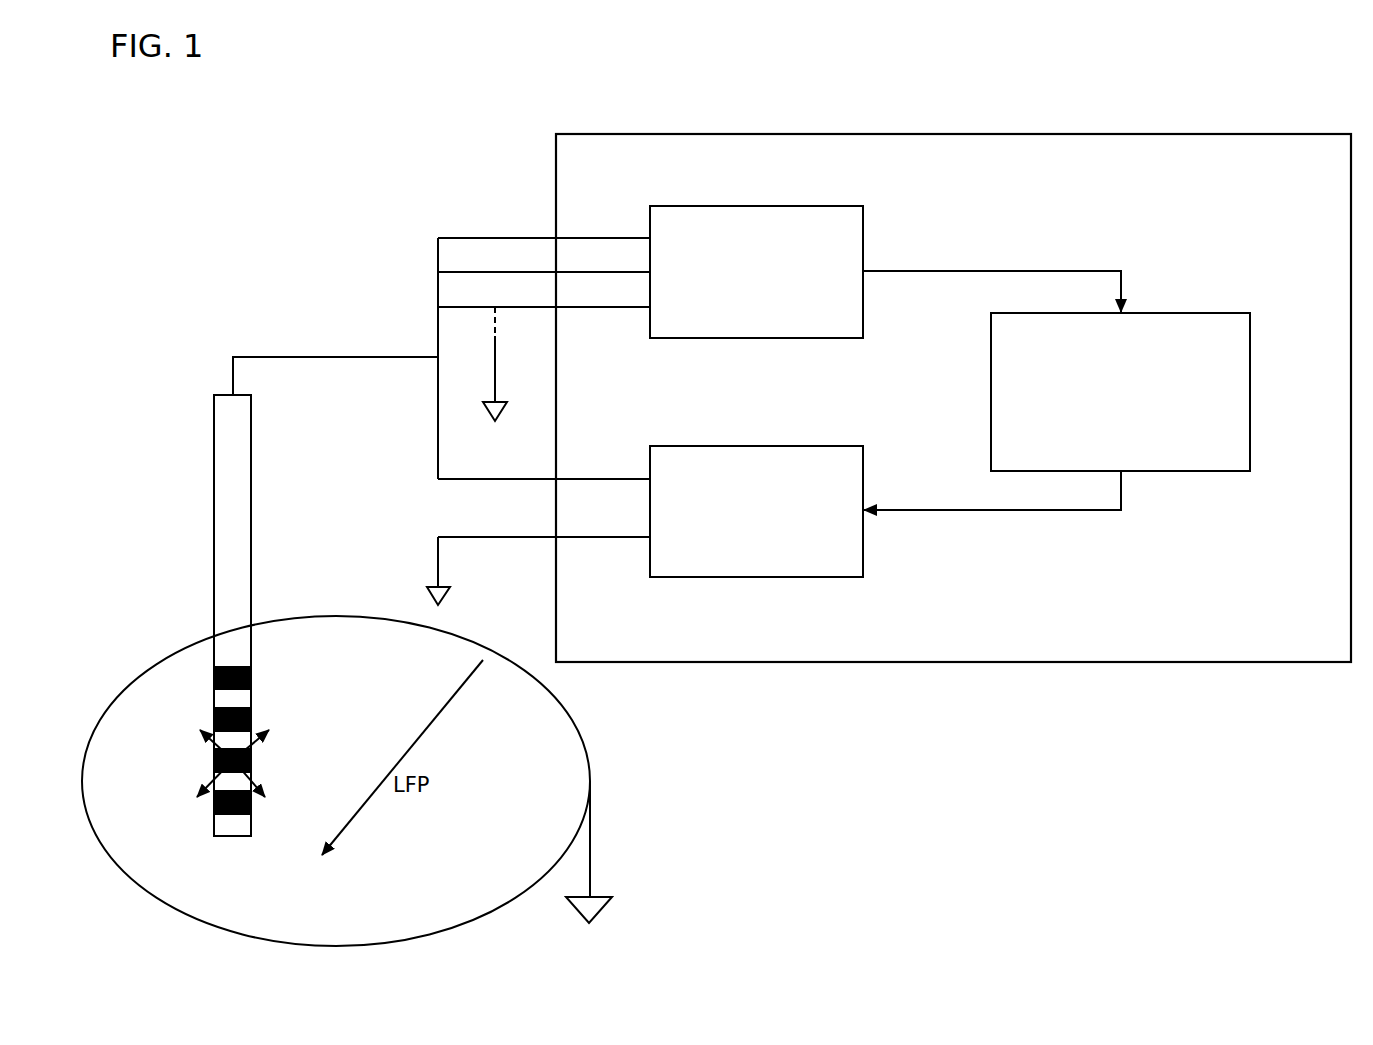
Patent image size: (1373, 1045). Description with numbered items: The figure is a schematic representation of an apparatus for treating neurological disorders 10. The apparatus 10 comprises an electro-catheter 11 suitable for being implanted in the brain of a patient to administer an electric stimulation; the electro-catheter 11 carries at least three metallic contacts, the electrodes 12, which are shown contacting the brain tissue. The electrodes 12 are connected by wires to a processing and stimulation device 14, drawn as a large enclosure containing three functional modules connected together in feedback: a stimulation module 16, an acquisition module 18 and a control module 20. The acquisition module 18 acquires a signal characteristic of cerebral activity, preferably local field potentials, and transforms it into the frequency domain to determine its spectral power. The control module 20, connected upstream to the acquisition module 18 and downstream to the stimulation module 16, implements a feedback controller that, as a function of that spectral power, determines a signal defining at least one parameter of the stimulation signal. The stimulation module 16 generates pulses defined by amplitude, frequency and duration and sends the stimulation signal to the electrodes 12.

The apparatus for treating neurological disorders 10 is at (344, 205).
The electro-catheter 11 is at (214, 480).
The electrodes 12 is at (215, 813).
The processing and stimulation device 14 is at (912, 662).
The stimulation module 16 is at (756, 511).
The acquisition module 18 is at (756, 272).
The control module 20 is at (1120, 392).